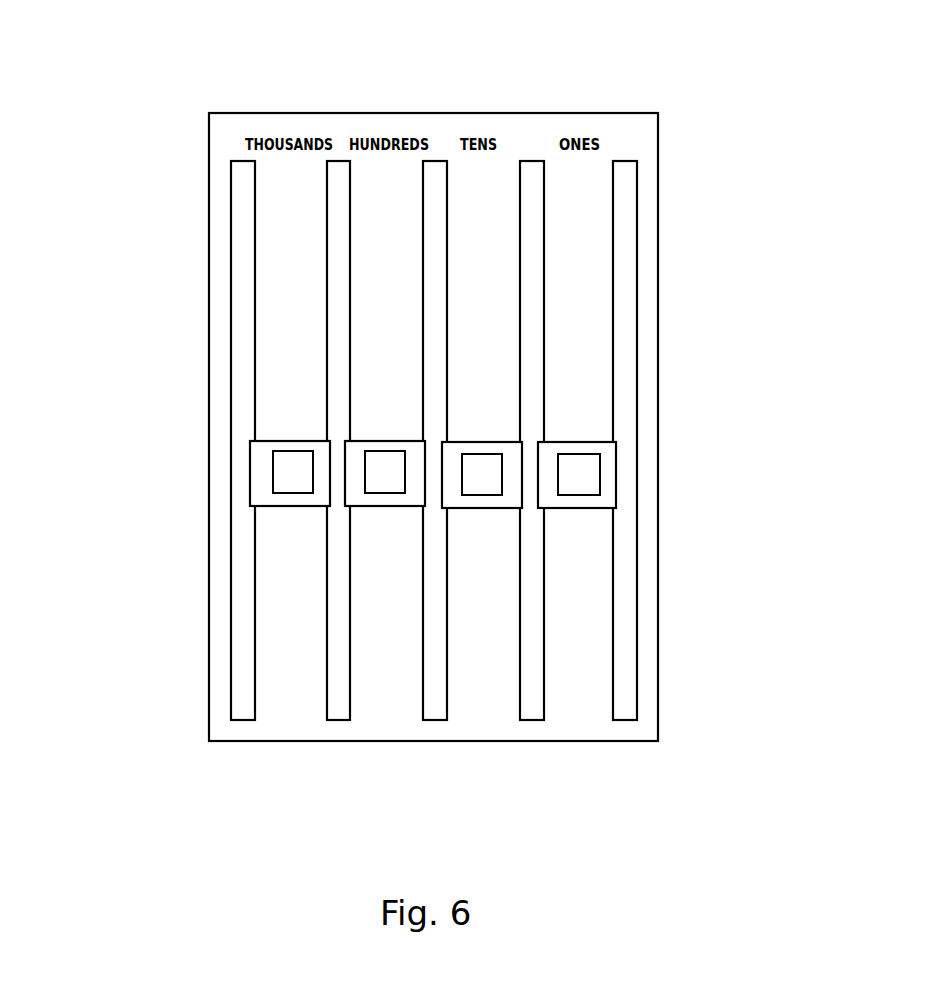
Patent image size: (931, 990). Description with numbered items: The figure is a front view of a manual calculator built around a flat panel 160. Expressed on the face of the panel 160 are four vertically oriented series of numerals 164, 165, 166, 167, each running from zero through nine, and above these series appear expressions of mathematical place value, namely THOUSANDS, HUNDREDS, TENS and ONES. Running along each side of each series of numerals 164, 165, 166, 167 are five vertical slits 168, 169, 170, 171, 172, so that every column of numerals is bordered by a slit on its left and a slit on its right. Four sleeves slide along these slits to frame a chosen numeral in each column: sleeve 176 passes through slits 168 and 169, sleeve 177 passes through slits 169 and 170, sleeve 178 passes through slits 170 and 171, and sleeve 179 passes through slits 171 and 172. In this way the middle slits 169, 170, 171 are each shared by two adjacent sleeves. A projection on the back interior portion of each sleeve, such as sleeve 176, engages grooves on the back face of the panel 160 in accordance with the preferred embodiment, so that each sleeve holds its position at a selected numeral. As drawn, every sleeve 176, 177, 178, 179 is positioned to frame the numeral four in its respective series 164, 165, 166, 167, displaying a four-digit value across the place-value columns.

The flat panel 160 is at (205, 347).
The series of numerals 164 is at (293, 718).
The series of numerals 165 is at (387, 718).
The series of numerals 166 is at (491, 722).
The series of numerals 167 is at (586, 722).
The slit 168 is at (240, 187).
The slit 169 is at (335, 162).
The slit 170 is at (435, 162).
The slit 171 is at (528, 163).
The slit 172 is at (629, 196).
The sleeve 176 is at (258, 482).
The sleeve 177 is at (363, 497).
The sleeve 178 is at (510, 498).
The sleeve 179 is at (610, 472).